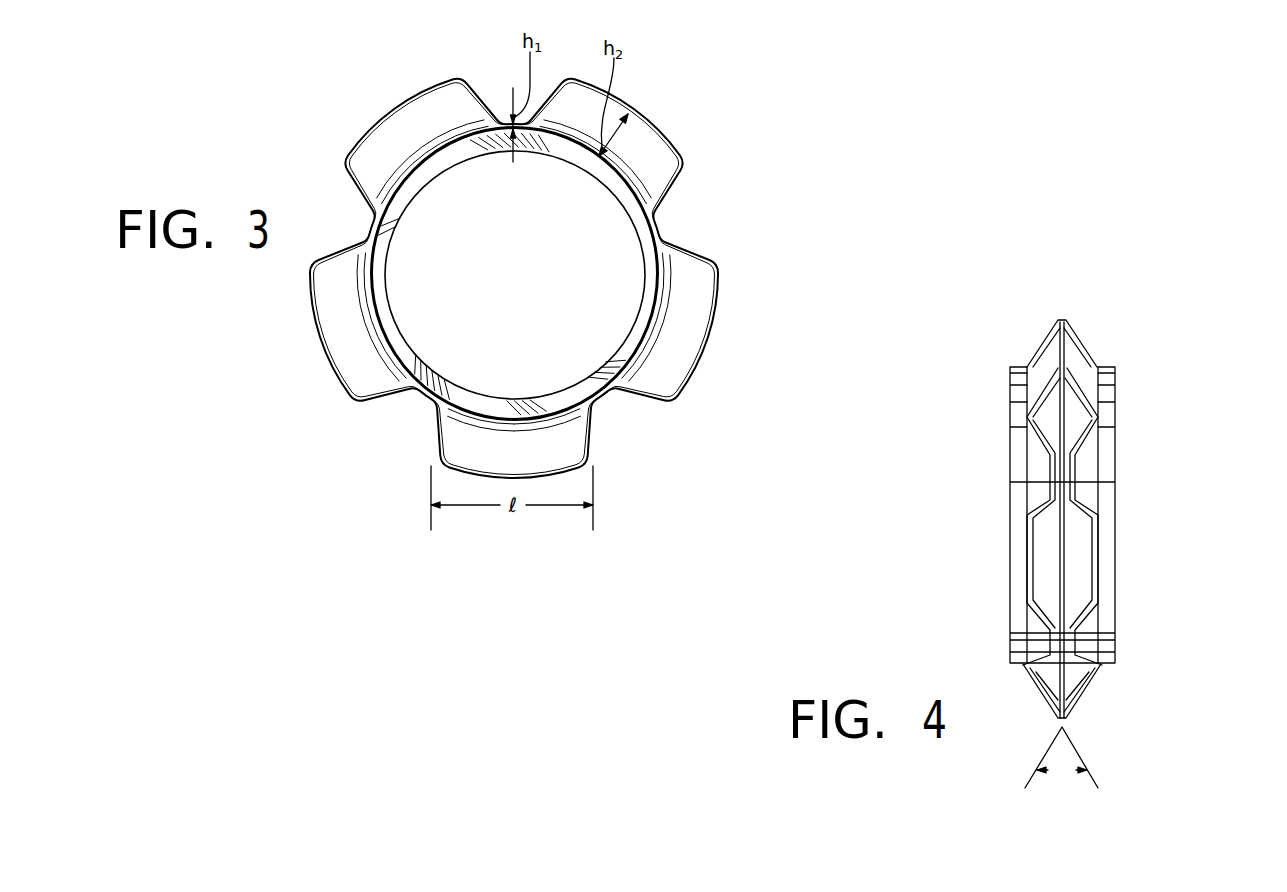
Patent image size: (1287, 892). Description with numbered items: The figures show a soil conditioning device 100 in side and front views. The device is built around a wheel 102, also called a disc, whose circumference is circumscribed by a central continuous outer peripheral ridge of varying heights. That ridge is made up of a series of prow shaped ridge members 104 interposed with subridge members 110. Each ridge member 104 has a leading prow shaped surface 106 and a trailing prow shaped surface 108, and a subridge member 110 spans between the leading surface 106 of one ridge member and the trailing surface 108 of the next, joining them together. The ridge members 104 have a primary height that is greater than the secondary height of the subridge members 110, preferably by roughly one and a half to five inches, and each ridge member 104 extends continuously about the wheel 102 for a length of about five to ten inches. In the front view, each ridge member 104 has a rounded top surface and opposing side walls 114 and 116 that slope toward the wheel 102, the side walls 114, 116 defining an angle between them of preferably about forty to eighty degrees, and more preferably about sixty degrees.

In FIG. 3, the soil conditioning device 100 is at (782, 146).
In FIG. 4, the soil conditioning device 100 is at (1185, 245).
In FIG. 3, the wheel 102 is at (422, 173).
In FIG. 4, the wheel 102 is at (1011, 440).
In FIG. 3, the prow shaped ridge member 104 is at (642, 150).
In FIG. 4, the prow shaped ridge member 104 is at (1040, 352).
In FIG. 3, the leading prow shaped surface 106 is at (593, 437).
In FIG. 4, the leading prow shaped surface 106 is at (1075, 620).
In FIG. 3, the trailing prow shaped surface 108 is at (437, 438).
In FIG. 4, the trailing prow shaped surface 108 is at (1045, 510).
In FIG. 3, the subridge member 110 is at (653, 230).
In FIG. 4, the subridge member 110 is at (1064, 463).
In FIG. 3, the side wall 114 is at (670, 357).
In FIG. 4, the side wall 114 is at (1075, 697).
In FIG. 4, the side wall 116 is at (1040, 692).